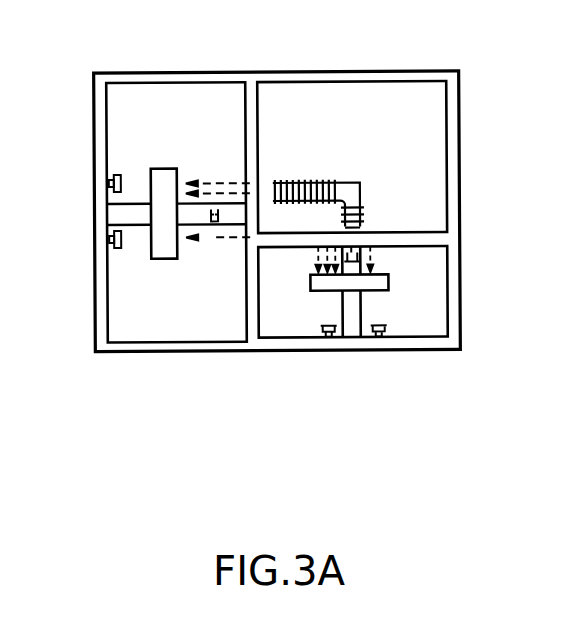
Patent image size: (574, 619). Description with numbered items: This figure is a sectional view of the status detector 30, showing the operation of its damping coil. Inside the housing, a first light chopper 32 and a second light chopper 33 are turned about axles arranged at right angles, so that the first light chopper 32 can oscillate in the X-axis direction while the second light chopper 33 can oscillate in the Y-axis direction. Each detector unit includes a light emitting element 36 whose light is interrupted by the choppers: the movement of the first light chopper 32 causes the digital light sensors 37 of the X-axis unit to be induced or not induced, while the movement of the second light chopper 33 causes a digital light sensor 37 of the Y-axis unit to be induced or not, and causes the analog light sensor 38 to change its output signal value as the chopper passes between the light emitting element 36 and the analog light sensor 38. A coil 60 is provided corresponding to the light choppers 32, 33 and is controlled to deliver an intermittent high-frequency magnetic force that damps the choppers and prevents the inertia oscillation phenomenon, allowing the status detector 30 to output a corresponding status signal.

The status detector 30 is at (463, 183).
The first light chopper 32 is at (388, 283).
The second light chopper 33 is at (168, 250).
The light emitting element 36 is at (349, 264).
The digital light sensor 37 is at (112, 240).
The analog light sensor 38 is at (116, 172).
The coil 60 is at (334, 181).